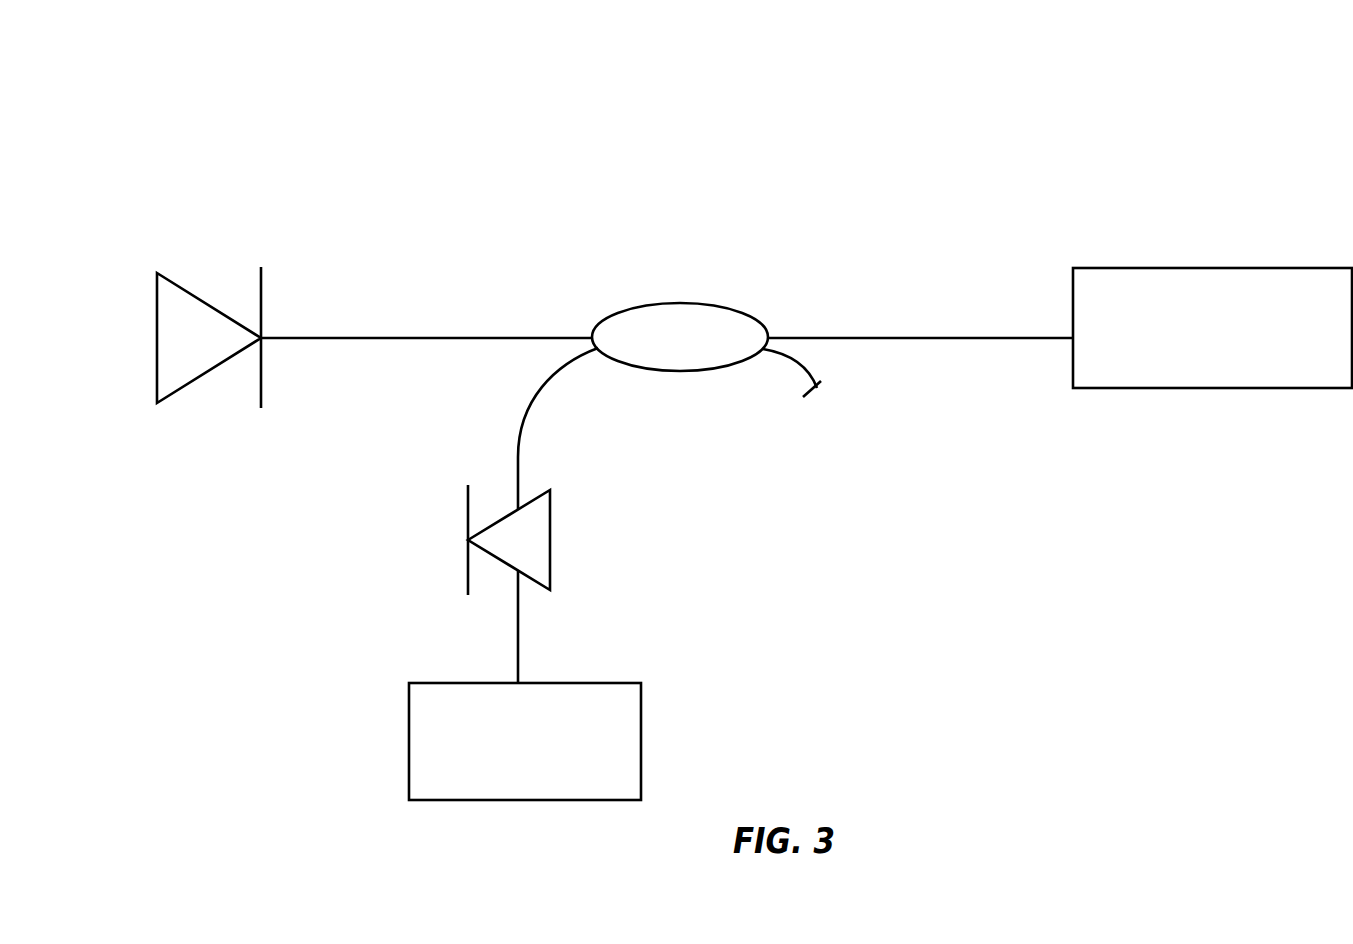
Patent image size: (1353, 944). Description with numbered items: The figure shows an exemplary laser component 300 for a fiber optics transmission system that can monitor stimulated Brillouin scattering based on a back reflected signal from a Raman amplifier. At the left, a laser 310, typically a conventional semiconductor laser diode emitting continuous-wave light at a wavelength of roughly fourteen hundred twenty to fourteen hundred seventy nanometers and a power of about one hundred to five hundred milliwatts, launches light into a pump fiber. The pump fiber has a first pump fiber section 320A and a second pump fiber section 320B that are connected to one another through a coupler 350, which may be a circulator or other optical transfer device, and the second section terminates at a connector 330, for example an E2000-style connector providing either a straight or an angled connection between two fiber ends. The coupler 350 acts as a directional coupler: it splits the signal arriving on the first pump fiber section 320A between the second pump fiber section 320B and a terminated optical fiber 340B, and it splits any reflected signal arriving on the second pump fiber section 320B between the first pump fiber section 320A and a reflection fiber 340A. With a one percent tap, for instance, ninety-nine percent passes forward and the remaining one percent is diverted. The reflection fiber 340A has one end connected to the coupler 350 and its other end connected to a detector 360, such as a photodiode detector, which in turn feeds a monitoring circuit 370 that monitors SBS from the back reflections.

The laser component 300 is at (1126, 86).
The laser 310 is at (167, 275).
The first pump fiber section 320A is at (365, 338).
The second pump fiber section 320B is at (900, 338).
The connector 330 is at (1277, 268).
The reflection fiber 340A is at (572, 428).
The terminated optical fiber 340B is at (769, 382).
The coupler 350 is at (678, 303).
The detector 360 is at (550, 534).
The monitoring circuit 370 is at (587, 683).